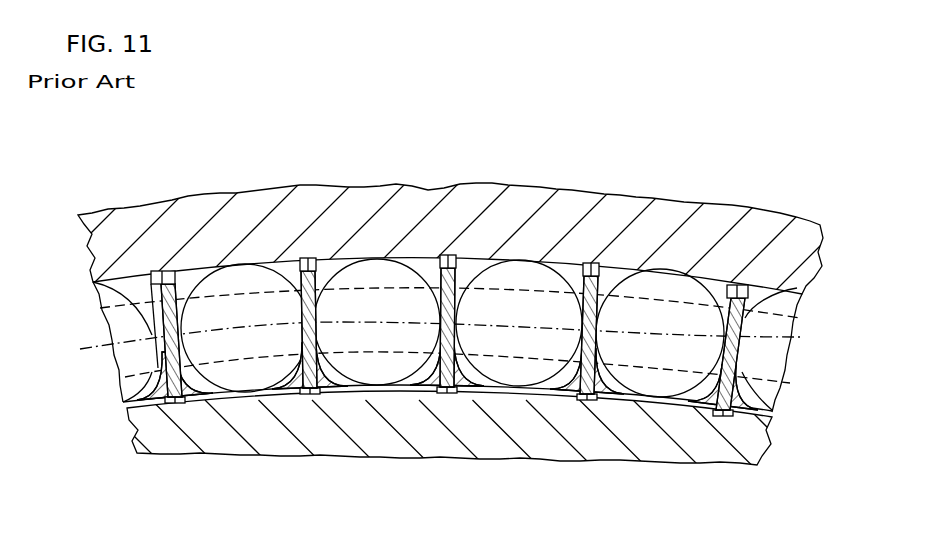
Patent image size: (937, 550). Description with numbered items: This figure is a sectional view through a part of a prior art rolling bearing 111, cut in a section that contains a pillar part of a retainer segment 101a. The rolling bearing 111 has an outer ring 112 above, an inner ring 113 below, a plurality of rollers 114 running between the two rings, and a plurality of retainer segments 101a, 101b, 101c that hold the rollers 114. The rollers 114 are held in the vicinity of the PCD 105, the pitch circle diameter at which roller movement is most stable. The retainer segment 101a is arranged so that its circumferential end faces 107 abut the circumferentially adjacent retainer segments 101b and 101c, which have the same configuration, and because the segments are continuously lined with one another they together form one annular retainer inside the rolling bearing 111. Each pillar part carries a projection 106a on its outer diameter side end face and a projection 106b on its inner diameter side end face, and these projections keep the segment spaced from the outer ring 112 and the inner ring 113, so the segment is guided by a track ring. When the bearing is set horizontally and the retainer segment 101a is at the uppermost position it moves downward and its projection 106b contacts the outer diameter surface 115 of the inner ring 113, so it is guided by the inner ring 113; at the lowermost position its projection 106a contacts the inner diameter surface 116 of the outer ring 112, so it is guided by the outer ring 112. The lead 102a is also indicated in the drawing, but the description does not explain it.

The retainer segment 101a is at (722, 138).
The retainer segment 101b is at (143, 317).
The retainer segment 101c is at (755, 287).
The solder 102a is at (376, 305).
The PCD (Pitch Circle Diameter) 105 is at (804, 358).
The projection 106a is at (168, 272).
The projection 106b is at (178, 403).
The circumferential end face 107 is at (800, 337).
The rolling bearing 111 is at (778, 126).
The outer ring 112 is at (806, 283).
The inner ring 113 is at (748, 432).
The roller 114 is at (249, 348).
The outer diameter surface 115 is at (785, 406).
The inner diameter surface 116 is at (797, 290).